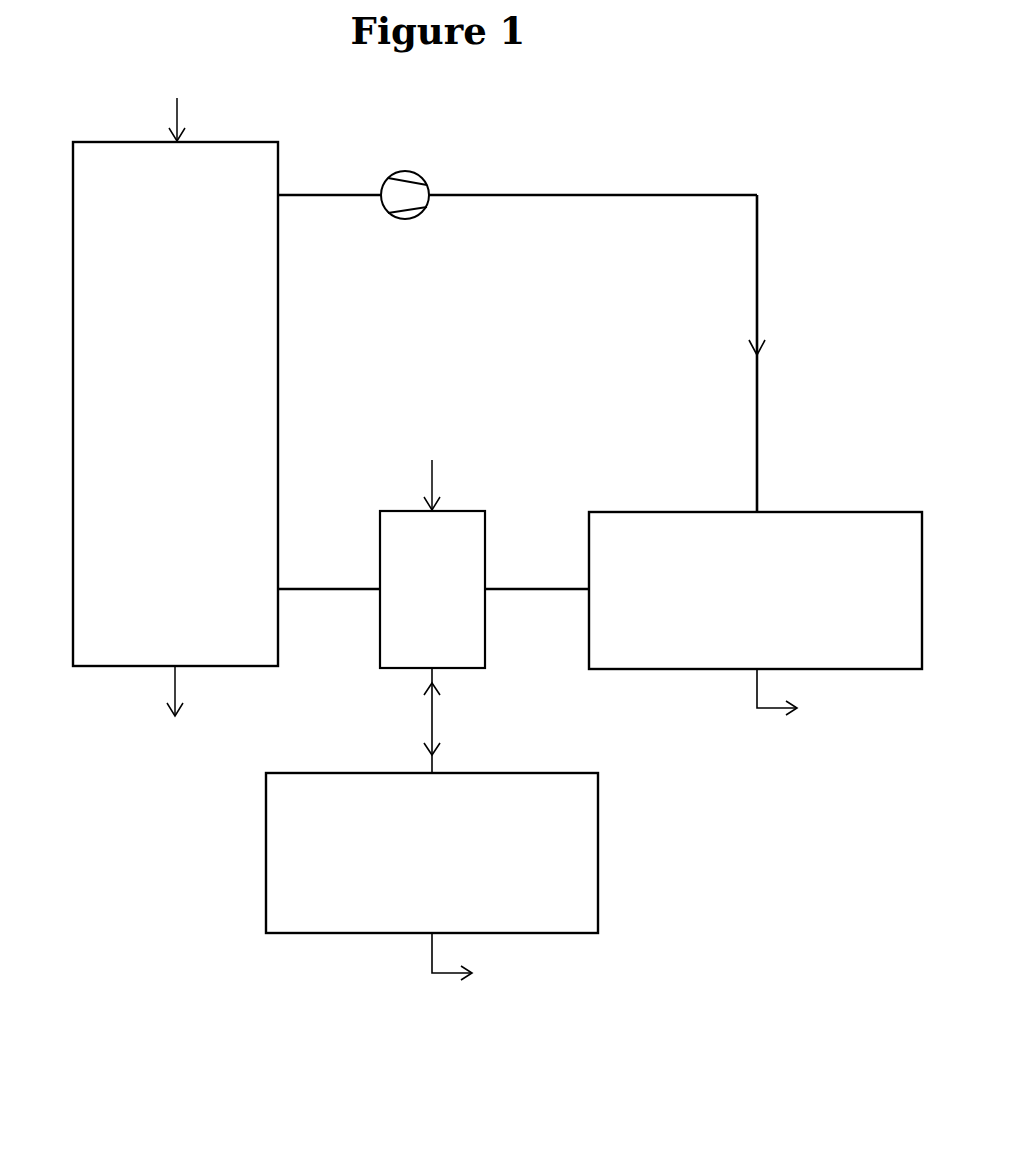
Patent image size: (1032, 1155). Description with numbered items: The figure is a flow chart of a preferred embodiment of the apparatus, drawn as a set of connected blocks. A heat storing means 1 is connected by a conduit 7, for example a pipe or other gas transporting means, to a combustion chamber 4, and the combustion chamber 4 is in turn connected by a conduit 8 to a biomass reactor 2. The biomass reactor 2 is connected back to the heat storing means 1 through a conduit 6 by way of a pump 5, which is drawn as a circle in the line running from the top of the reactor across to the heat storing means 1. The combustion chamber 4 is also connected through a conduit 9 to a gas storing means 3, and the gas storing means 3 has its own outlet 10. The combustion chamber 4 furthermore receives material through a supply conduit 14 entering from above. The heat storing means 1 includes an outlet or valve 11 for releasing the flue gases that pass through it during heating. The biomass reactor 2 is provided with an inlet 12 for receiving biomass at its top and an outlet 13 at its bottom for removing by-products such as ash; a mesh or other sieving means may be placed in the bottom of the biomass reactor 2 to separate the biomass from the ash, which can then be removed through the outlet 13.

The heat storing means 1 is at (818, 531).
The biomass reactor 2 is at (82, 322).
The gas storing means 3 is at (590, 846).
The combustion chamber 4 is at (385, 635).
The pump 5 is at (517, 175).
The conduit 6 is at (762, 323).
The conduit or gas transporting means 7 is at (515, 588).
The conduit 8 is at (311, 588).
The conduit 9 is at (437, 723).
The outlet 10 is at (420, 950).
The outlet or valve 11 is at (750, 679).
The inlet for receiving biomass 12 is at (166, 114).
The outlet for removing by-products 13 is at (165, 690).
The supply conduit 14 is at (435, 470).